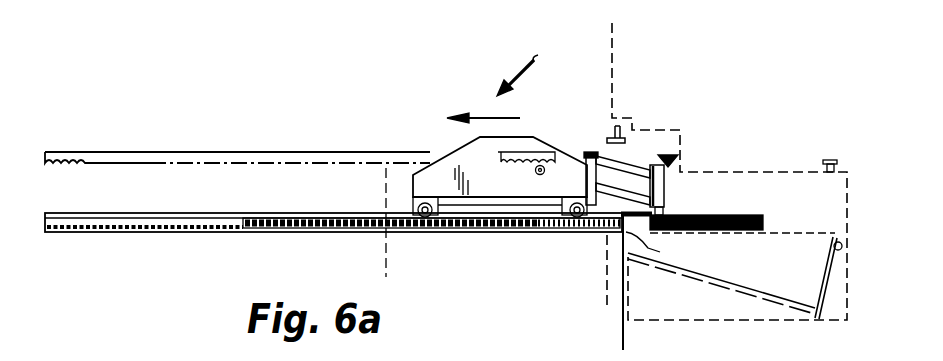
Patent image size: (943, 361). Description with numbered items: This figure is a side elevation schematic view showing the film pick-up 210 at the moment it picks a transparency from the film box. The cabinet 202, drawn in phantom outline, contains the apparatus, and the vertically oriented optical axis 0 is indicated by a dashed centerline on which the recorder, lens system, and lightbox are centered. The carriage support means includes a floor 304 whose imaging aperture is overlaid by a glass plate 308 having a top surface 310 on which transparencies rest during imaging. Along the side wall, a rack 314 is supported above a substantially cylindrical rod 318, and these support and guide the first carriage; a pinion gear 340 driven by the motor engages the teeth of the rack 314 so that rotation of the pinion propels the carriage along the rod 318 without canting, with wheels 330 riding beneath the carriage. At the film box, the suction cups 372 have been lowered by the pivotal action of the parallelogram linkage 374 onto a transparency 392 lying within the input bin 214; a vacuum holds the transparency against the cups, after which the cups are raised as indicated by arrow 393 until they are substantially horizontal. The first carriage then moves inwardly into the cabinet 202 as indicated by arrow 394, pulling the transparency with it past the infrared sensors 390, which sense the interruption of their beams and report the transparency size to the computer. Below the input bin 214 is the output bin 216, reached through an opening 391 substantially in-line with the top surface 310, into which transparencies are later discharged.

The optical axis 0 is at (388, 258).
The cabinet 202 is at (612, 35).
The film pick-up 210 is at (536, 65).
The input bin 214 is at (822, 225).
The output bin 216 is at (730, 315).
The floor 304 is at (200, 232).
The glass plate 308 is at (293, 232).
The top surface 310 is at (277, 198).
The rack 314 is at (217, 153).
The rod 318 is at (163, 198).
The carriage wheel 330 is at (578, 216).
The pinion gear 340 is at (500, 176).
The suction cups 372 is at (660, 212).
The parallelogram linkage 374 is at (632, 160).
The infrared sensors 390 is at (612, 134).
The opening 391 is at (660, 252).
The transparency 392 is at (750, 215).
The arrow 393 is at (672, 162).
The arrow 394 is at (480, 118).